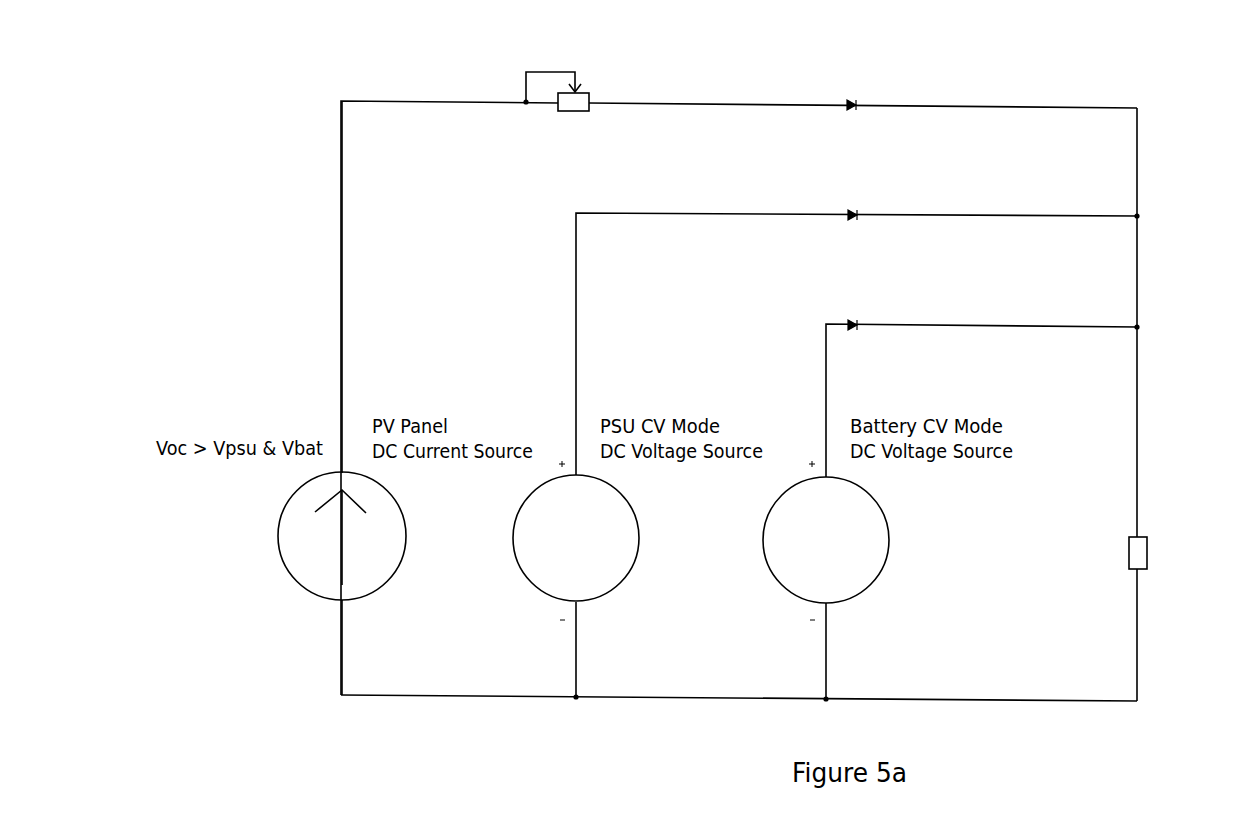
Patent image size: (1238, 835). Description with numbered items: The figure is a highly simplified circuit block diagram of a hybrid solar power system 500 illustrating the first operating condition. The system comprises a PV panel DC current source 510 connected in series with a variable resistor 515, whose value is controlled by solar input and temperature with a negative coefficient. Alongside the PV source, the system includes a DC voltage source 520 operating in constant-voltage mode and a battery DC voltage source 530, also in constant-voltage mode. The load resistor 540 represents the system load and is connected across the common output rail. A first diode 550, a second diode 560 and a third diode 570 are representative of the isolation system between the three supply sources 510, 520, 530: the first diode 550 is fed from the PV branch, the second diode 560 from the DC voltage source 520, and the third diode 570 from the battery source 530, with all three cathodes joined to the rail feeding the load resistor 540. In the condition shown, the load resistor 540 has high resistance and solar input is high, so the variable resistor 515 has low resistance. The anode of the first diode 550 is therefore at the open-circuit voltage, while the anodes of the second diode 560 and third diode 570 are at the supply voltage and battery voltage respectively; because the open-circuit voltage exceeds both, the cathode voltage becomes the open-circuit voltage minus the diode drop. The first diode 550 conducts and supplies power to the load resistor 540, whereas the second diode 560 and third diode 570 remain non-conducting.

The hybrid solar power system 500 is at (1147, 68).
The PV panel DC current source 510 is at (286, 564).
The variable resistor VR1 515 is at (558, 110).
The DC voltage source 520 is at (530, 582).
The battery DC voltage source 530 is at (778, 584).
The load resistor RL 540 is at (1126, 570).
The diode D1 550 is at (853, 104).
The diode D2 560 is at (855, 214).
The diode D3 570 is at (855, 323).